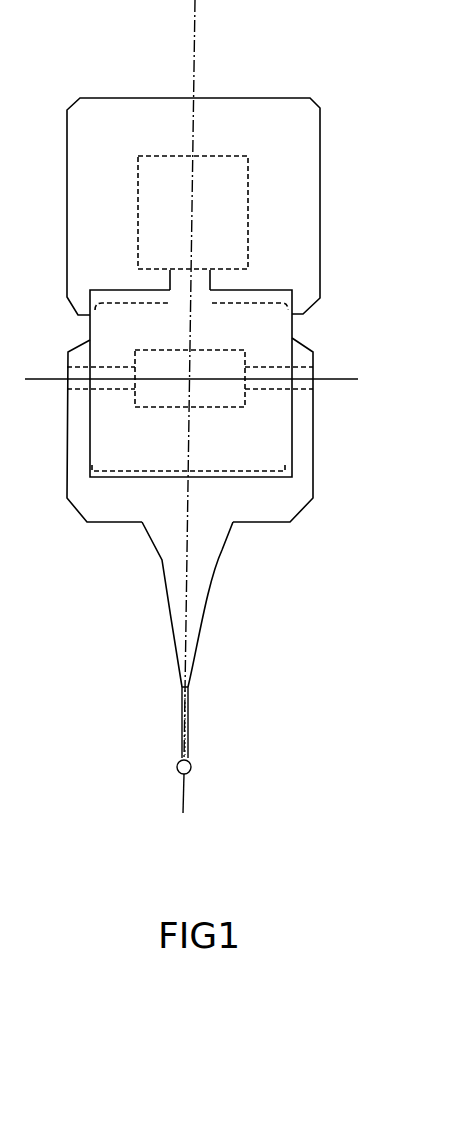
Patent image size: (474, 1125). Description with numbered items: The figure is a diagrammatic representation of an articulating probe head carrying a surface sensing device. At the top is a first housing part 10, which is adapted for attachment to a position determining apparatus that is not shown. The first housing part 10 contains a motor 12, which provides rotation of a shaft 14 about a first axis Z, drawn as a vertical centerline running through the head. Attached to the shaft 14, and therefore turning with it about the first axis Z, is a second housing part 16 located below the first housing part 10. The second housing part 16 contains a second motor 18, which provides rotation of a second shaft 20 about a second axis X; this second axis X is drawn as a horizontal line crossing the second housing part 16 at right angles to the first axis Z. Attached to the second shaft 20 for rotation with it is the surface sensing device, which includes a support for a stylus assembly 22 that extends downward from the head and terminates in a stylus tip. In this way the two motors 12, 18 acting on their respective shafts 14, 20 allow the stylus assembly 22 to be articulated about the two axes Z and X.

The first housing part 10 is at (320, 158).
The motor 12 is at (235, 228).
The shaft 14 is at (202, 285).
The second housing part 16 is at (268, 320).
The second motor 18 is at (223, 396).
The second shaft 20 is at (305, 387).
The stylus assembly 22 is at (193, 607).
The first axis Z is at (195, 47).
The second axis X is at (332, 376).